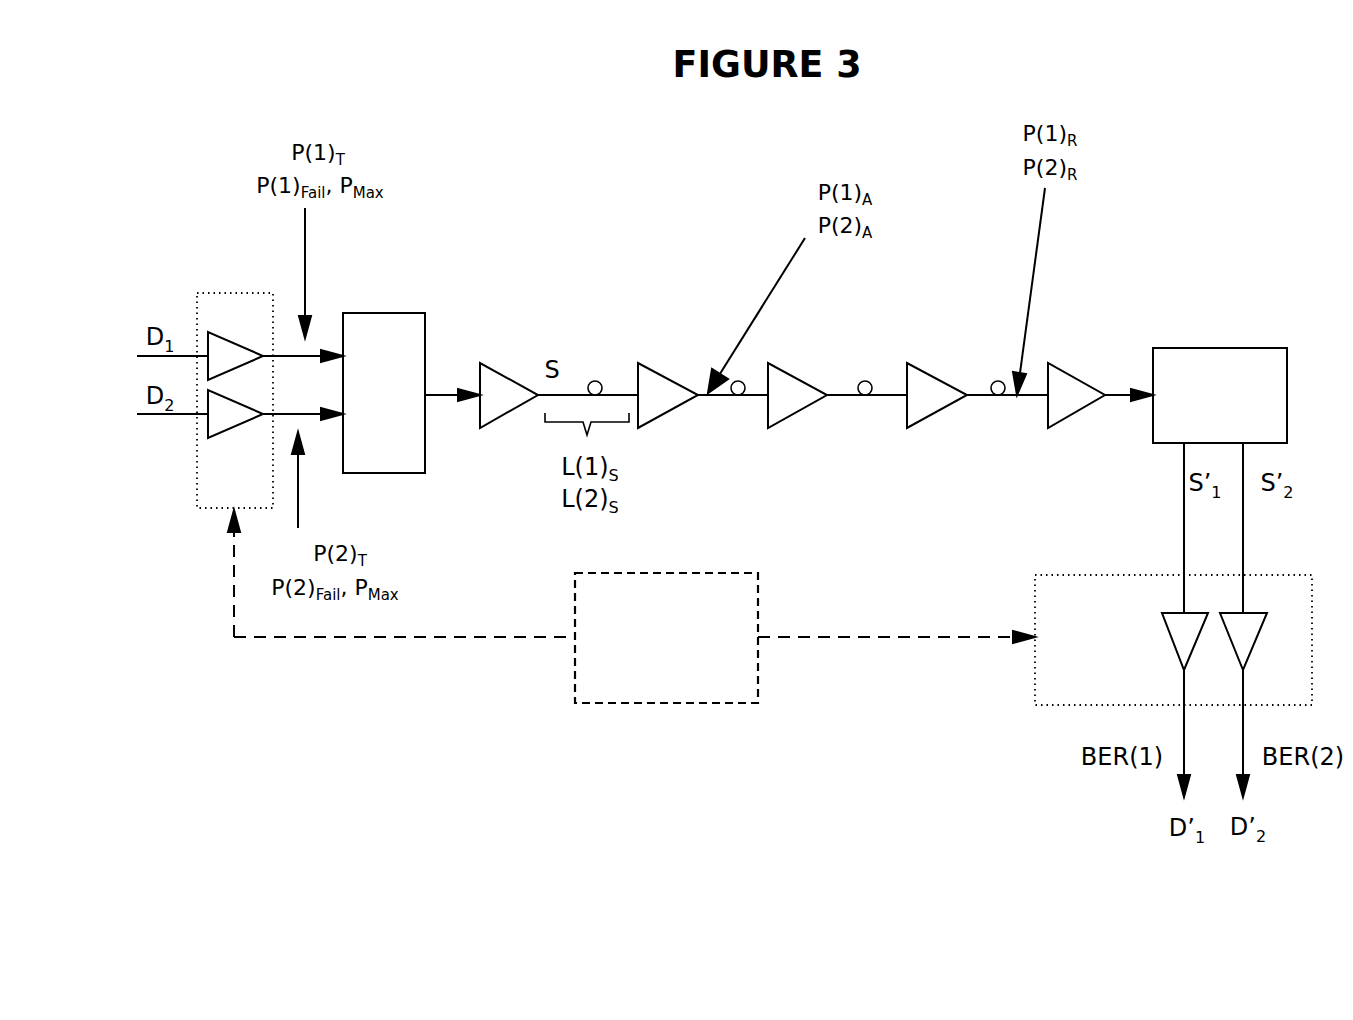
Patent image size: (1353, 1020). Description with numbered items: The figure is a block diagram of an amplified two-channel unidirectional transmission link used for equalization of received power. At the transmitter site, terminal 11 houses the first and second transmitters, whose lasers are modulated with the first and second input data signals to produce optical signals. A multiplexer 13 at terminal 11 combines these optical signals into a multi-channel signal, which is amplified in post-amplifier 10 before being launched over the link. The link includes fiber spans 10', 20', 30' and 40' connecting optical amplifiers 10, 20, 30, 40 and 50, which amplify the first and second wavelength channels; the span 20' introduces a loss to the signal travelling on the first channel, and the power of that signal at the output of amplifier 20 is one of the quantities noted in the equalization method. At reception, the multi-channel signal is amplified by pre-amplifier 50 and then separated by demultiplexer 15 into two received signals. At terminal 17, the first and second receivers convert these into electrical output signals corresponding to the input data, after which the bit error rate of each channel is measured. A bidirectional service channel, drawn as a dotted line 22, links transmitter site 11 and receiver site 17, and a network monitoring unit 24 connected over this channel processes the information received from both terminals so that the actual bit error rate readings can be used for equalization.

The post-amplifier 10 is at (546, 347).
The fiber span 10' is at (617, 349).
The terminal 11 is at (195, 468).
The multiplexer 13 is at (403, 312).
The demultiplexer 15 is at (1233, 348).
The terminal 17 is at (1028, 680).
The optical amplifier 20 is at (694, 359).
The fiber span 20' is at (713, 437).
The service channel 22 is at (457, 638).
The monitoring unit 24 is at (667, 704).
The optical amplifier 30 is at (823, 370).
The fiber span 30' is at (867, 444).
The optical amplifier 40 is at (948, 437).
The fiber span 40' is at (958, 354).
The pre-amplifier 50 is at (1067, 418).